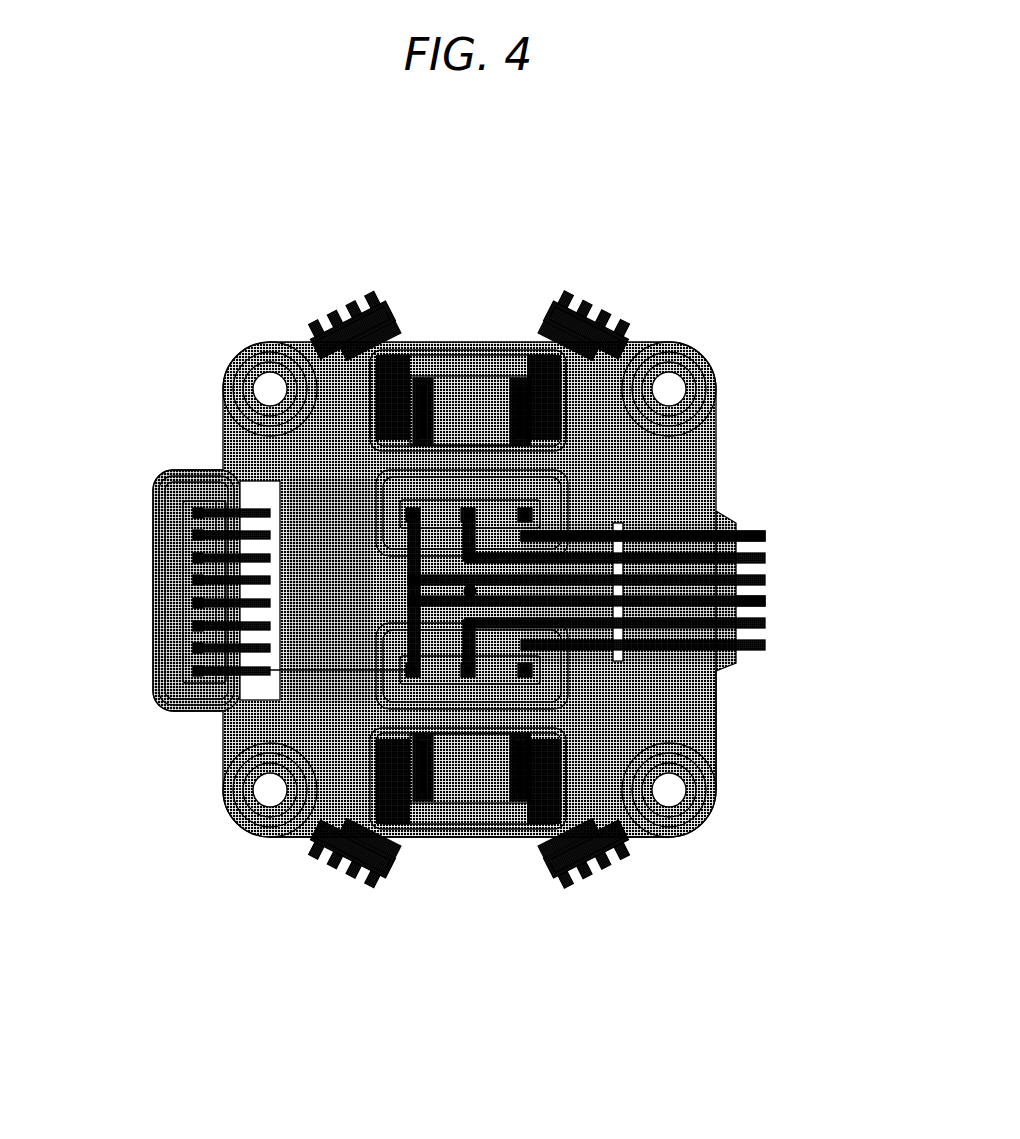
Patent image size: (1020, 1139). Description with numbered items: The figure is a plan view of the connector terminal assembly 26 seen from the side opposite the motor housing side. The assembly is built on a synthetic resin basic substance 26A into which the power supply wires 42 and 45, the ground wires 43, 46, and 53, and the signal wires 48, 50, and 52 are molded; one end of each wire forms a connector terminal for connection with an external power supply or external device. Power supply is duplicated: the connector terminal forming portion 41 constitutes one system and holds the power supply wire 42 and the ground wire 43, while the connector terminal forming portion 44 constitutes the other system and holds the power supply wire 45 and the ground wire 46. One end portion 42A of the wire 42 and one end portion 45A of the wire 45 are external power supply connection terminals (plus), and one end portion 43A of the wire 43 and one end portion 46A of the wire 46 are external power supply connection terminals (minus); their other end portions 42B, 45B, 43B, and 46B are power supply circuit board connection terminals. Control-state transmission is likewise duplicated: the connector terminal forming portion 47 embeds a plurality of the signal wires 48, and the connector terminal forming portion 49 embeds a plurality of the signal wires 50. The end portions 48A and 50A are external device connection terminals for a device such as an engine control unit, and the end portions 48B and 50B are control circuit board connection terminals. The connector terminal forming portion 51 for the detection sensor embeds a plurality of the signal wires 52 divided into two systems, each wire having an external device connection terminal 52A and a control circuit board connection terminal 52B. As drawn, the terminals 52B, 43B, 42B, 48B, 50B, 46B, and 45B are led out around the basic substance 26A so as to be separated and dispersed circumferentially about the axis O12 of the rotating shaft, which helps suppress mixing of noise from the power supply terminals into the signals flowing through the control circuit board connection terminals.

The connector terminal assembly 26 is at (772, 265).
The basic substance of the connector terminal assembly 26A is at (710, 697).
The connector terminal forming portion 41 is at (468, 805).
The power supply wire 42 is at (577, 782).
The one end portion of the power supply wire 42A is at (510, 800).
The other end portion of the power supply wire 42B is at (608, 852).
The ground wire 43 is at (357, 775).
The one end portion of the ground wire 43A is at (412, 800).
The other end portion of the ground wire 43B is at (330, 858).
The connector terminal forming portion 44 is at (458, 368).
The power supply wire 45 is at (350, 390).
The one end portion of the power supply wire 45A is at (412, 392).
The other end portion of the power supply wire 45B is at (325, 338).
The ground wire 46 is at (578, 392).
The one end portion of the ground wire 46A is at (503, 392).
The other end portion of the ground wire 46B is at (600, 345).
The connector terminal forming portion 47 is at (400, 670).
The signal wire 48 is at (643, 590).
The one end portion of the signal wire 48A is at (362, 765).
The other end portion of the signal wire 48B is at (757, 595).
The connector terminal forming portion 49 is at (393, 505).
The signal wire 50 is at (633, 523).
The one end portion of the signal wire 50A is at (530, 505).
The other end portion of the signal wire 50B is at (757, 527).
The connector terminal forming portion 51 is at (177, 587).
The signal wire 52 is at (205, 673).
The one end portion of the signal wire 52A is at (183, 642).
The other end portion of the signal wire 52B is at (262, 640).
The ground wire 53 is at (367, 575).
The axis of the rotating shaft O12 is at (462, 583).